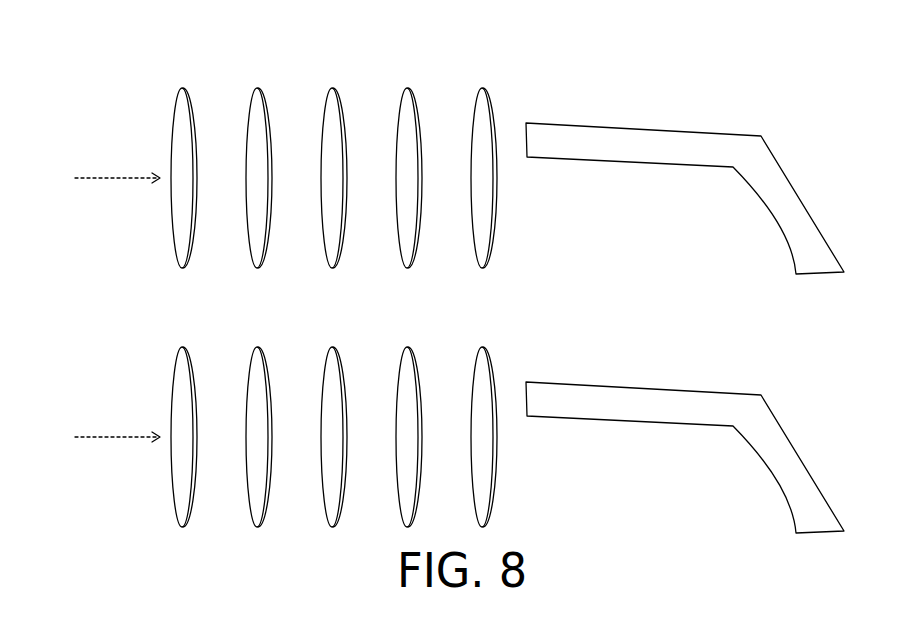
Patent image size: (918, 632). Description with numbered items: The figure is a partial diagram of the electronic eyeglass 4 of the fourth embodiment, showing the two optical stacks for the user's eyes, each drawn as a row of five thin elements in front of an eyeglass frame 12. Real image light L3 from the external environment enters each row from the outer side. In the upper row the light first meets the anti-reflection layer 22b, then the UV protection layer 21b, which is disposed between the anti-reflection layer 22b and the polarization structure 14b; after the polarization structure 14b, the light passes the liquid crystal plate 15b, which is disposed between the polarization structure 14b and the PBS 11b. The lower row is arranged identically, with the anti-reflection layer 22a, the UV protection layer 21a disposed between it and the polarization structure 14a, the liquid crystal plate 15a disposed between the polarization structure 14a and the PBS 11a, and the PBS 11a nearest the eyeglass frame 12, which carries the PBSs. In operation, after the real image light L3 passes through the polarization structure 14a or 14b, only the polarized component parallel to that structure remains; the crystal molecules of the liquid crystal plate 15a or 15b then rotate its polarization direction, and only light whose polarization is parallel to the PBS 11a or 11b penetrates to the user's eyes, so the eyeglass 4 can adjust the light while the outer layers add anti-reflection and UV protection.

The electronic eyeglass 4 is at (40, 38).
The real image light L3 is at (94, 307).
The anti-reflection layer 22b is at (184, 86).
The UV protection layer 21b is at (259, 86).
The polarization structure 14b is at (334, 86).
The liquid crystal plate 15b is at (409, 86).
The polarizing beam splitter 11b is at (484, 86).
The anti-reflection layer 22a is at (184, 345).
The UV protection layer 21a is at (259, 345).
The polarization structure 14a is at (334, 345).
The liquid crystal plate 15a is at (409, 345).
The polarizing beam splitter 11a is at (484, 345).
The eyeglass frame 12 is at (658, 136).